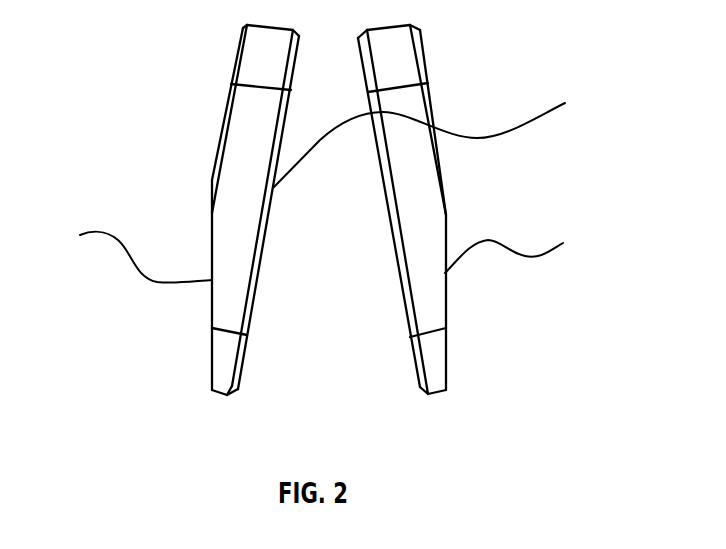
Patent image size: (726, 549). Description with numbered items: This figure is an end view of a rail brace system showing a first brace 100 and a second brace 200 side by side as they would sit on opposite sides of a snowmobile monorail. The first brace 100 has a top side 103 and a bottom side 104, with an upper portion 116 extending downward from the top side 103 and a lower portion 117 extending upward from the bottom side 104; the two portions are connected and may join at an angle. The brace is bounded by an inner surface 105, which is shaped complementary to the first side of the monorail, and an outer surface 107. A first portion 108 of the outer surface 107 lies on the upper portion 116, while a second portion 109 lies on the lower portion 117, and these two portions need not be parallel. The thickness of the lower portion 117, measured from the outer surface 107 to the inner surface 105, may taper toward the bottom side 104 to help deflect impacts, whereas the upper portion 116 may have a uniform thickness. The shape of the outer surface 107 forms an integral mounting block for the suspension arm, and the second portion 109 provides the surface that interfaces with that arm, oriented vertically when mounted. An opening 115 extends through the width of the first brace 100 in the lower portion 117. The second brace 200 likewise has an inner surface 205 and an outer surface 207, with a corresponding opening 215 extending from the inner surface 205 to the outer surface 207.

The first brace 100 is at (209, 235).
The top side 103 is at (267, 43).
The bottom side 104 is at (210, 390).
The inner surface 105 is at (437, 135).
The outer surface 107 is at (212, 237).
The first portion of outer surface 108 is at (212, 165).
The second portion of outer surface 109 is at (222, 348).
The opening 115 is at (127, 253).
The upper portion 116 is at (223, 105).
The lower portion 117 is at (212, 300).
The second brace 200 is at (431, 236).
The inner surface 205 is at (413, 375).
The outer surface 207 is at (447, 213).
The corresponding opening 215 is at (523, 250).